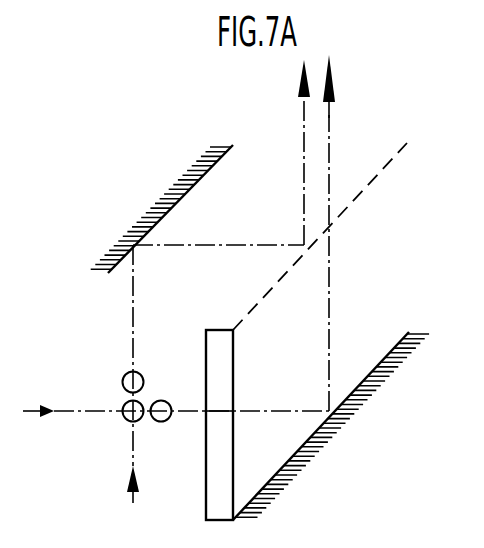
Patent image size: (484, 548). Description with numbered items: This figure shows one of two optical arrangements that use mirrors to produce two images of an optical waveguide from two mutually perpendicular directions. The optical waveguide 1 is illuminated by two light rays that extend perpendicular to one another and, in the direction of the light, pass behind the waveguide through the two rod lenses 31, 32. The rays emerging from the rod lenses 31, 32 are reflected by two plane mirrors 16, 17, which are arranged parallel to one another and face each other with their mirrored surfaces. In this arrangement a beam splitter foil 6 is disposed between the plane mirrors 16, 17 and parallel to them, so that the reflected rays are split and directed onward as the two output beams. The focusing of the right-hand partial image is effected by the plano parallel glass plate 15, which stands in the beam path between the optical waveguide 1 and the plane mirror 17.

The optical waveguide 1 is at (124, 420).
The beam splitter foil 6 is at (401, 159).
The plano parallel glass plate 15 is at (216, 494).
The plane mirror 16 is at (82, 283).
The plane mirror 17 is at (377, 366).
The rod lens 31 is at (144, 377).
The rod lens 32 is at (166, 421).